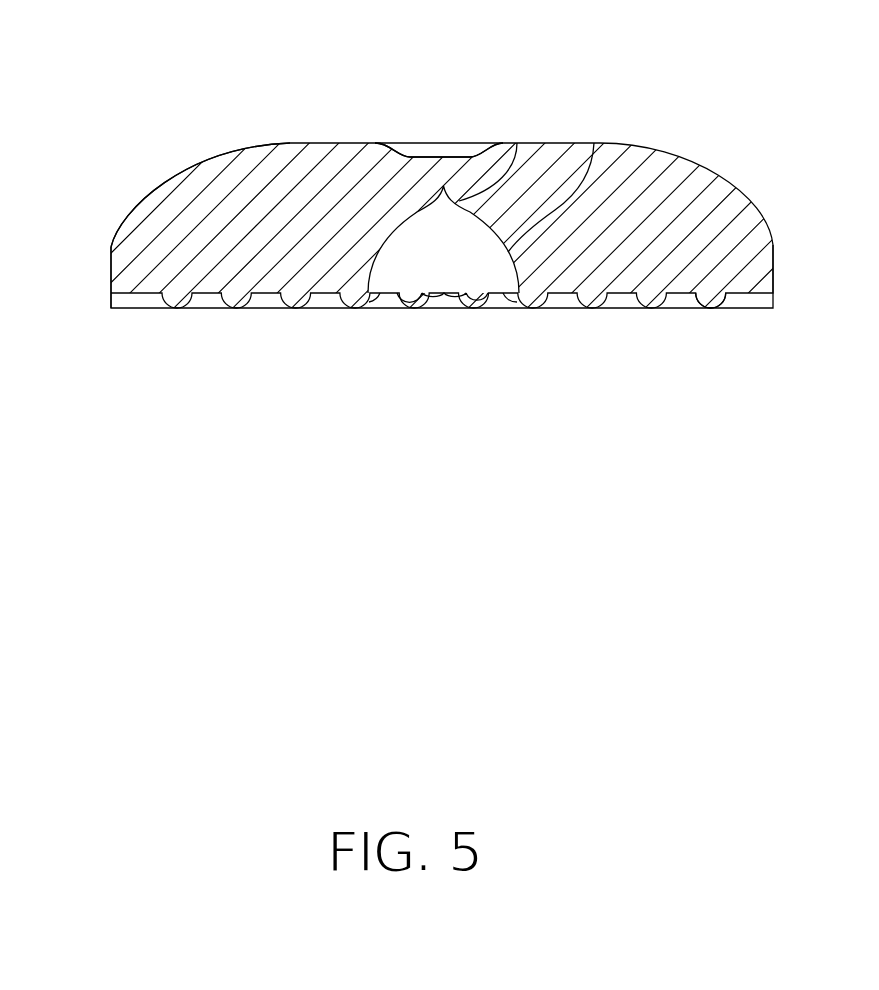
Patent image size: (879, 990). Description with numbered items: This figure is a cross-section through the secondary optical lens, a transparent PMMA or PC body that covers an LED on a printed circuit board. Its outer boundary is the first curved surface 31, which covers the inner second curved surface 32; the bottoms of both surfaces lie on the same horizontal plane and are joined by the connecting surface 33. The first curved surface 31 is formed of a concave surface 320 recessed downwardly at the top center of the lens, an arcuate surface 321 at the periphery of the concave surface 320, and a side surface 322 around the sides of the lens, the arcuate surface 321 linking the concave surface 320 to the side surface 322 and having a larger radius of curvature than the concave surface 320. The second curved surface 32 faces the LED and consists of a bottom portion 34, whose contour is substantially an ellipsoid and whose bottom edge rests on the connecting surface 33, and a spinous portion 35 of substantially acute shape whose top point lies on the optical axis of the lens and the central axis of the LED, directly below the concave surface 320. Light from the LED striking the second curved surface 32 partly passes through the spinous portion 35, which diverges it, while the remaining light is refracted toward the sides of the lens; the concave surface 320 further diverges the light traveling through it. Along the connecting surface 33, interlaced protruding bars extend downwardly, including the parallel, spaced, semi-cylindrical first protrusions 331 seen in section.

The first curved surface 31 is at (340, 102).
The second curved surface 32 is at (493, 74).
The connecting surface 33 is at (615, 293).
The bottom portion 34 is at (594, 143).
The spinous portion 35 is at (517, 143).
The concave surface 320 is at (407, 155).
The arcuate surface 321 is at (187, 168).
The side surface 322 is at (111, 258).
The first protrusions 331 is at (707, 298).